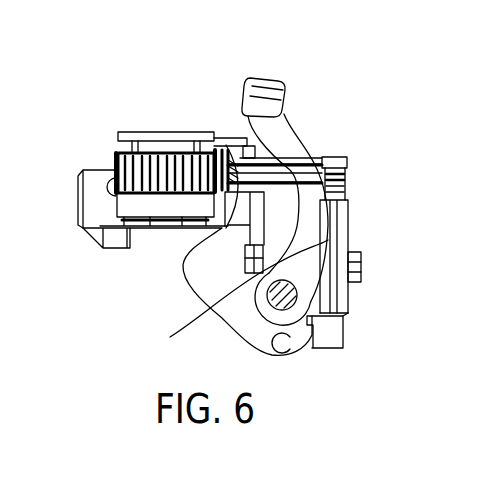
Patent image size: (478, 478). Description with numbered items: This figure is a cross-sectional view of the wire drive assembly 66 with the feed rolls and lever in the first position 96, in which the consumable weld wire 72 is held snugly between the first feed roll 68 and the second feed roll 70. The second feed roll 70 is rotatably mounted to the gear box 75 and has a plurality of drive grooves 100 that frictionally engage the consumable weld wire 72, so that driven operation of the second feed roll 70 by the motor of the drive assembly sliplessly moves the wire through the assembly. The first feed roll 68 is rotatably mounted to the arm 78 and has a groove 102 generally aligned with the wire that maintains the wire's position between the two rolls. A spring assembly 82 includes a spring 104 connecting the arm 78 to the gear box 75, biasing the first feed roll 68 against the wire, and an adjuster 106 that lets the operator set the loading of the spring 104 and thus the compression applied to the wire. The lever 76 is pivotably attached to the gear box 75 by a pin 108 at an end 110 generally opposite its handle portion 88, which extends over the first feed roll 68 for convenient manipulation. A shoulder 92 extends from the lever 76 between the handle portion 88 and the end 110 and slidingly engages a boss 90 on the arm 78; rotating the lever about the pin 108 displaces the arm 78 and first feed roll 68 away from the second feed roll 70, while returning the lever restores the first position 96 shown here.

The wire drive assembly 66 is at (378, 120).
The first feed roll 68 is at (308, 168).
The second feed roll 70 is at (118, 170).
The consumable weld wire 72 is at (183, 259).
The gear box 75 is at (135, 250).
The lever 76 is at (287, 138).
The arm 78 is at (340, 208).
The spring assembly 82 is at (397, 315).
The handle portion 88 is at (263, 76).
The boss 90 is at (337, 305).
The shoulder 92 is at (322, 243).
The first position 96 is at (317, 368).
The drive grooves 100 is at (174, 166).
The groove 102 is at (347, 170).
The spring 104 is at (232, 296).
The adjuster 106 is at (363, 270).
The pin 108 is at (262, 318).
The end 110 is at (227, 298).